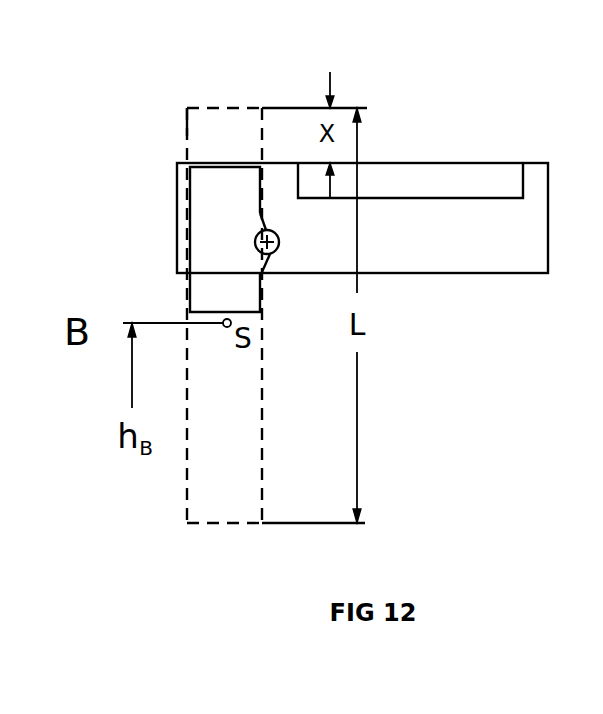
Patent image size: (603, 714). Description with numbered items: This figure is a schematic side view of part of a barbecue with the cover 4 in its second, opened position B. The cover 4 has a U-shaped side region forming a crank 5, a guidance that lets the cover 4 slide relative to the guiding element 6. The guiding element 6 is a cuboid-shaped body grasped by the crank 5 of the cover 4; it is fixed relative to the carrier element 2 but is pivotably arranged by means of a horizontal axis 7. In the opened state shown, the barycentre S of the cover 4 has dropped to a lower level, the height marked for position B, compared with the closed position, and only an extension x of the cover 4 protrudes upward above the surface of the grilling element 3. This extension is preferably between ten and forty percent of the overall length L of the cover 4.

The carrier element 2 is at (487, 257).
The grilling element 3 is at (457, 180).
The cover 4 is at (200, 477).
The crank 5 is at (190, 152).
The guiding element 6 is at (210, 213).
The horizontal axis 7 is at (255, 243).